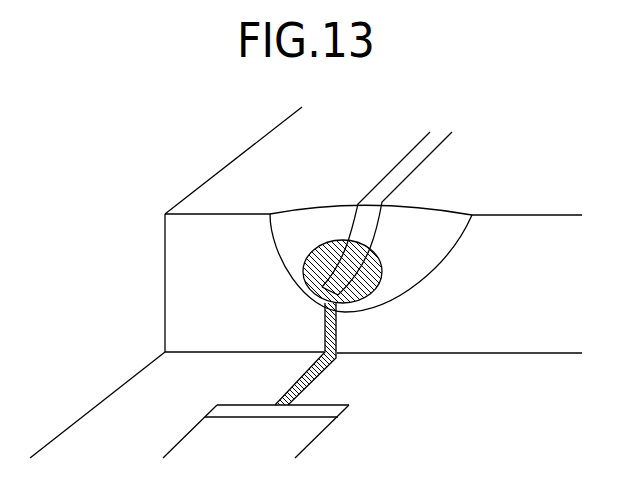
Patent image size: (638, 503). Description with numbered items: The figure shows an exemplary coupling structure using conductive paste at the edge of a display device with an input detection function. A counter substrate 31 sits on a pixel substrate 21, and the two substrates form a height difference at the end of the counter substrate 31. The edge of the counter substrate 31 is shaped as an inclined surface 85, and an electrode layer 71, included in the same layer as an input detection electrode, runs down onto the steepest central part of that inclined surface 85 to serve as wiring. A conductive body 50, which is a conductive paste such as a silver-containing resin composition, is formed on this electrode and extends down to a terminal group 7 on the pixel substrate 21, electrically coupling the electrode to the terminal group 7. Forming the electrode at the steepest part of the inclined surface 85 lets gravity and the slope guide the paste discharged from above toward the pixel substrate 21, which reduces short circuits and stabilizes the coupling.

The terminal group 7 is at (327, 412).
The pixel substrate 21 is at (106, 416).
The counter substrate 31 is at (223, 184).
The conductive body 50 is at (338, 366).
The electrode layer 71 is at (393, 178).
The inclined surface 85 is at (430, 270).